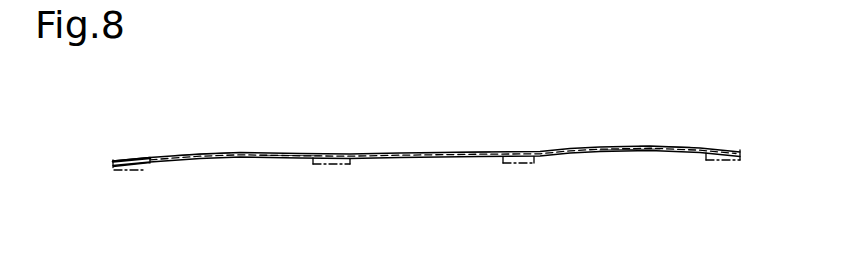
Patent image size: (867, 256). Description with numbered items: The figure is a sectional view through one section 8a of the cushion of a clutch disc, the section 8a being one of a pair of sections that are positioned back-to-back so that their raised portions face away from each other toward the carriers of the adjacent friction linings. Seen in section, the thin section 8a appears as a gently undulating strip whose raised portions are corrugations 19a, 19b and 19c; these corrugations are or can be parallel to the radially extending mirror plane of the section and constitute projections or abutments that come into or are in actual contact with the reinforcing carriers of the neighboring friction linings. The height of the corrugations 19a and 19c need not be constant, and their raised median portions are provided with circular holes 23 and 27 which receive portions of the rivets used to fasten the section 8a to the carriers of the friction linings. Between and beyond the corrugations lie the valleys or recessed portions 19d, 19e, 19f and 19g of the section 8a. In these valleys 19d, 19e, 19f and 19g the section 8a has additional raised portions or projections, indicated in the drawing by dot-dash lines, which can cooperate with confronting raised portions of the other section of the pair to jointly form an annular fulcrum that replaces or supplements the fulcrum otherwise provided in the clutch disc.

The corrugation 19a is at (196, 153).
The corrugation 19b is at (452, 152).
The corrugation 19c is at (666, 146).
The recessed portion 19d is at (523, 153).
The recessed portion 19e is at (336, 153).
The recessed portion 19f is at (738, 152).
The recessed portion 19g is at (115, 160).
The circular hole 23 is at (226, 159).
The section 8a is at (282, 159).
The circular hole 27 is at (631, 152).